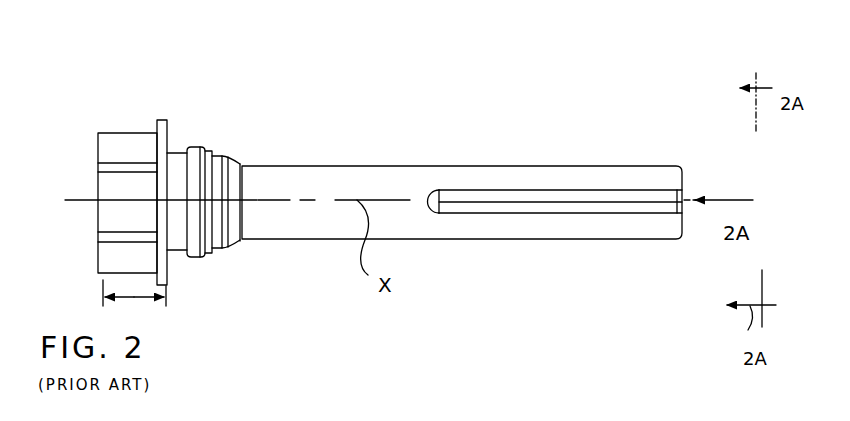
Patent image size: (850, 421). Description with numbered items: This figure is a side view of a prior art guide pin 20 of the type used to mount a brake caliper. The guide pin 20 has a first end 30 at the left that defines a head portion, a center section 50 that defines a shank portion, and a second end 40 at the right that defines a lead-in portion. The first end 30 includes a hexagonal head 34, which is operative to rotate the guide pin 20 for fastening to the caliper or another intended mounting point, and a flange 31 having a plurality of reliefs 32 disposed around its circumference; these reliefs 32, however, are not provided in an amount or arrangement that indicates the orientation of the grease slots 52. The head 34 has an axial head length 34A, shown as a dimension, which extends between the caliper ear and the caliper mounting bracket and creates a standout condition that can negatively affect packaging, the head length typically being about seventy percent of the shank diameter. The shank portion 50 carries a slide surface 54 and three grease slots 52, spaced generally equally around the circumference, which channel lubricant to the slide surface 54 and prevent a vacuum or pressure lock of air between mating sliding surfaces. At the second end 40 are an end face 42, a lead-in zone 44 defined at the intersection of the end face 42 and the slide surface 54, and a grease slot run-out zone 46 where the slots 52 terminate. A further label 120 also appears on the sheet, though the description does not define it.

The guide pin 20 is at (530, 118).
The first end 30 is at (85, 178).
The flange 31 is at (162, 122).
The reliefs 32 is at (163, 203).
The hexagonal head 34 is at (126, 133).
The axial head length 34A is at (100, 297).
The second end 40 is at (702, 176).
The end face 42 is at (688, 225).
The lead-in zone 44 is at (684, 243).
The grease slot run-out zone 46 is at (685, 167).
The center section 50 is at (432, 157).
The grease slots 52 is at (597, 203).
The slide surface 54 is at (510, 165).
The muzzle device 120 is at (540, 420).